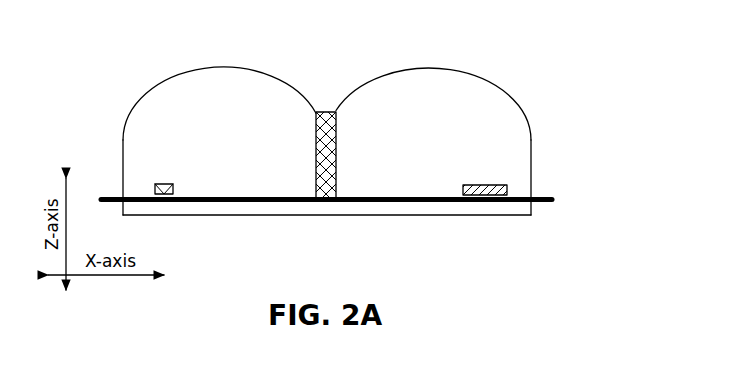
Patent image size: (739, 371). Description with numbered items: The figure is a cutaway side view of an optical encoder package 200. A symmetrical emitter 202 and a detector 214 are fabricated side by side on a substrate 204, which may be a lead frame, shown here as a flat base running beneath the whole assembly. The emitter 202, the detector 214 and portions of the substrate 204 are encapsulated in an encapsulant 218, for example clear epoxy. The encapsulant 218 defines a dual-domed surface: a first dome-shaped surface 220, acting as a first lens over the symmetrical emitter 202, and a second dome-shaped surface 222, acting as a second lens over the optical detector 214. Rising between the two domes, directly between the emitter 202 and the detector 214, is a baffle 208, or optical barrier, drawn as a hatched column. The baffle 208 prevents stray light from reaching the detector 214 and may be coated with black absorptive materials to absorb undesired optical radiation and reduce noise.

The optical encoder package 200 is at (349, 152).
The symmetrical emitter 202 is at (173, 185).
The substrate 204 is at (248, 202).
The baffle 208 is at (327, 112).
The detector 214 is at (473, 187).
The encapsulant 218 is at (184, 122).
The first dome-shaped surface 220 is at (183, 75).
The second dome-shaped surface 222 is at (459, 73).